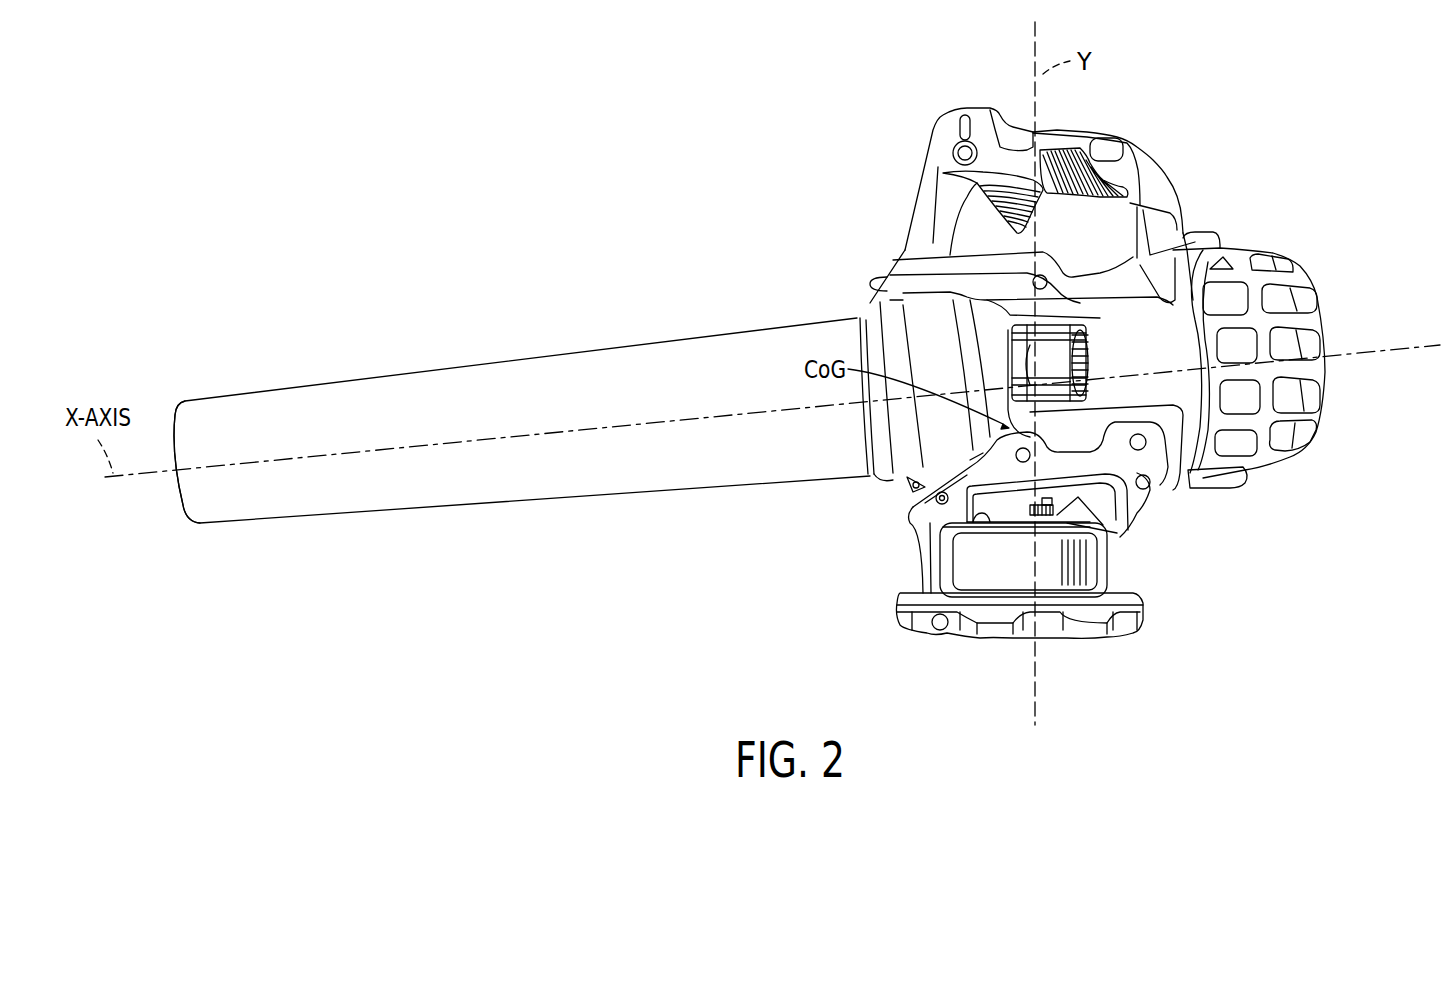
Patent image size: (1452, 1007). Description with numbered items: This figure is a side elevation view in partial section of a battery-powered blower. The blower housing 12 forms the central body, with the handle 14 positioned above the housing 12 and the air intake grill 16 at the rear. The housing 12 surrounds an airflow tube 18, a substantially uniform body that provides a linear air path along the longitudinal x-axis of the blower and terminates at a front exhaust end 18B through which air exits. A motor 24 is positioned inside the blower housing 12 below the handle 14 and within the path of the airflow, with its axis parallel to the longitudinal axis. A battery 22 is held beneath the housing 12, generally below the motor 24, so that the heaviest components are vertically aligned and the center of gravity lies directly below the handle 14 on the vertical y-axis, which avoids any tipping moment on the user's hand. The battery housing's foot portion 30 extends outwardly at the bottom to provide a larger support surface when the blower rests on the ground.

The blower housing 12 is at (903, 487).
The handle 14 is at (1153, 182).
The air intake grill 16 is at (1300, 263).
The airflow tube 18 is at (380, 585).
The exhaust end 18B is at (175, 442).
The battery 22 is at (947, 573).
The motor 24 is at (1007, 355).
The foot portion 30 is at (1143, 627).